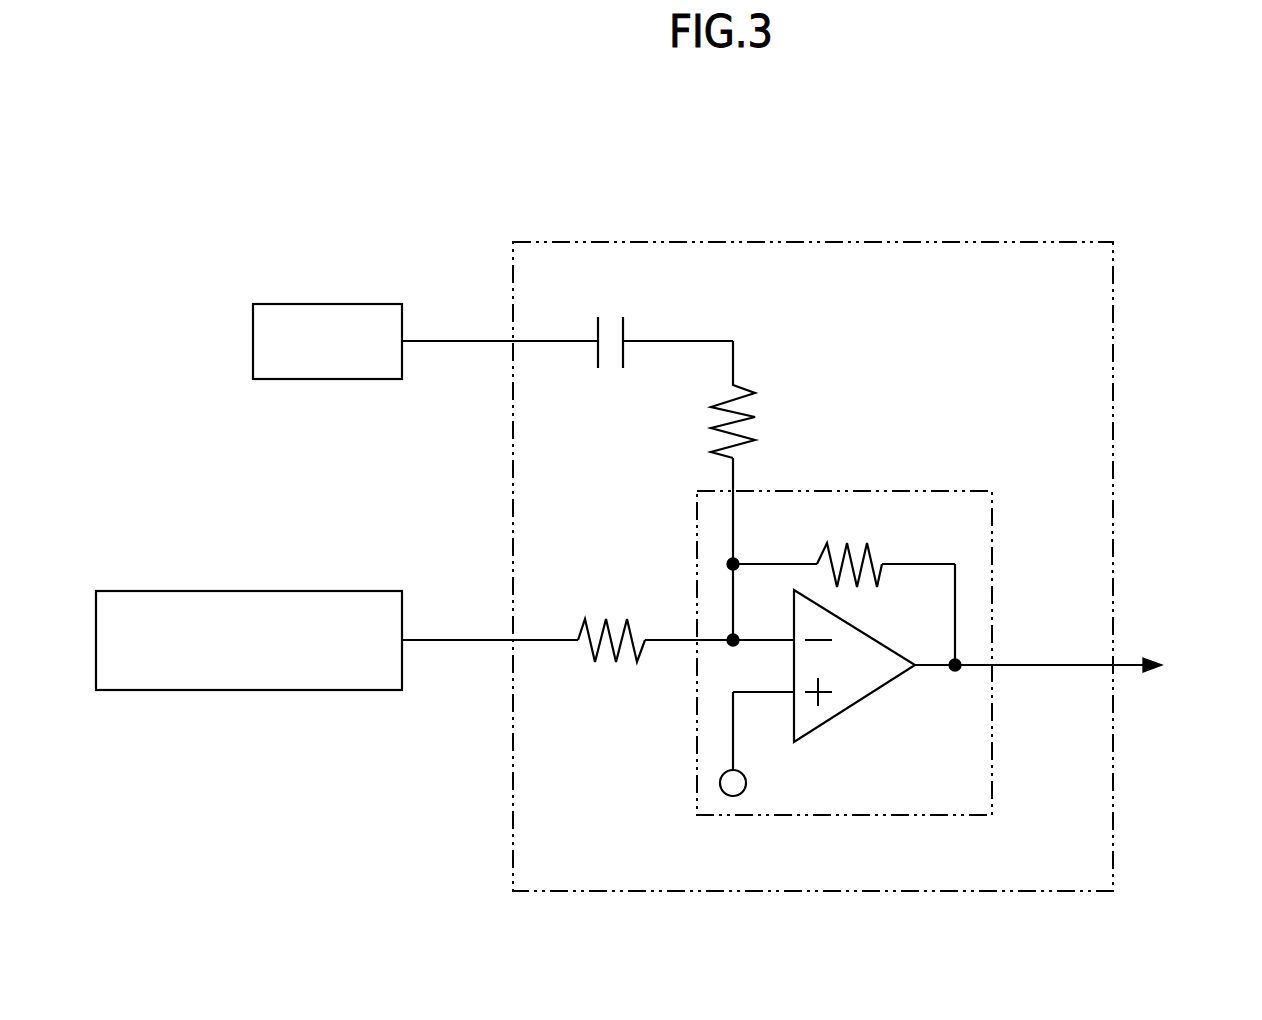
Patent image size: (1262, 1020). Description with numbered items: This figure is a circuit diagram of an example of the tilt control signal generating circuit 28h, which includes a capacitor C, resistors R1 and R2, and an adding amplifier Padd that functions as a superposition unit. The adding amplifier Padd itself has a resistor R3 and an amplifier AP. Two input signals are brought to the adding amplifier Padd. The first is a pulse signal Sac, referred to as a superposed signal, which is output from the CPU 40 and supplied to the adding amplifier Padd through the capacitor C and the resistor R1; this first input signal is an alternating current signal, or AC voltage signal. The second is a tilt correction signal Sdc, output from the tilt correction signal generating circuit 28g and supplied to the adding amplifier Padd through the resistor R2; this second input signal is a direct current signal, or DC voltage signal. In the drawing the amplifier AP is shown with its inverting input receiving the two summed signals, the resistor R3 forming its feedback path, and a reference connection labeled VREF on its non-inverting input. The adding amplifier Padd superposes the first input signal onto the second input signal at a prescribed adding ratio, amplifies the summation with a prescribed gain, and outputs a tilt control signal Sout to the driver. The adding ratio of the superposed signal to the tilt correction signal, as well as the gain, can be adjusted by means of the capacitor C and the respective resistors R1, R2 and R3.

The tilt control signal generating circuit 28h is at (1007, 242).
The CPU 40 is at (328, 379).
The tilt correction signal generating circuit 28g is at (328, 690).
The adding amplifier Padd is at (915, 491).
The capacitor C is at (610, 323).
The resistor R1 is at (709, 421).
The resistor R2 is at (611, 620).
The resistor R3 is at (844, 583).
The amplifier AP is at (853, 703).
The reference voltage terminal VREF is at (771, 745).
The pulse signal Sac is at (427, 341).
The tilt correction signal Sdc is at (427, 640).
The tilt control signal Sout is at (1015, 665).